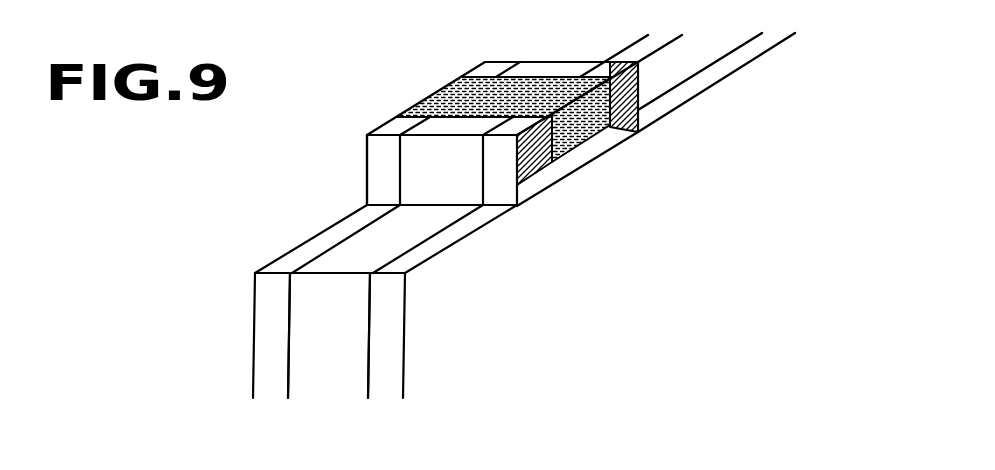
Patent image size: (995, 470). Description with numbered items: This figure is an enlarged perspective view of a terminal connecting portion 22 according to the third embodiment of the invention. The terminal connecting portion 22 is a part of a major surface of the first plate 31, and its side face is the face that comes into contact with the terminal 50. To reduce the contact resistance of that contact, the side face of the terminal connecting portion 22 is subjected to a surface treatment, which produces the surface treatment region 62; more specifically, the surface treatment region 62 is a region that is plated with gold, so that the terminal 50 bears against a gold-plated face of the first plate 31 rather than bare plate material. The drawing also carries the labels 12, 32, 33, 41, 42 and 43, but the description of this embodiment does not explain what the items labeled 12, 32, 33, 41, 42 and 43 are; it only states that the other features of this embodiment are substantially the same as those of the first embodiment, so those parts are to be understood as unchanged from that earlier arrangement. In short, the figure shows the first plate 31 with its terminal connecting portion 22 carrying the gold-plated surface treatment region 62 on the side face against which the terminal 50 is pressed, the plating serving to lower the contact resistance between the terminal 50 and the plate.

The flat cable 12 is at (251, 236).
The terminal connecting portion 22 is at (386, 120).
The first plate 31 is at (387, 387).
The conductor 32 is at (327, 387).
The conductor 33 is at (272, 387).
The terminal portion 41 is at (498, 190).
The terminal portion 42 is at (438, 140).
The terminal portion 43 is at (377, 175).
The terminal 50 is at (537, 77).
The surface treatment region 62 is at (620, 122).